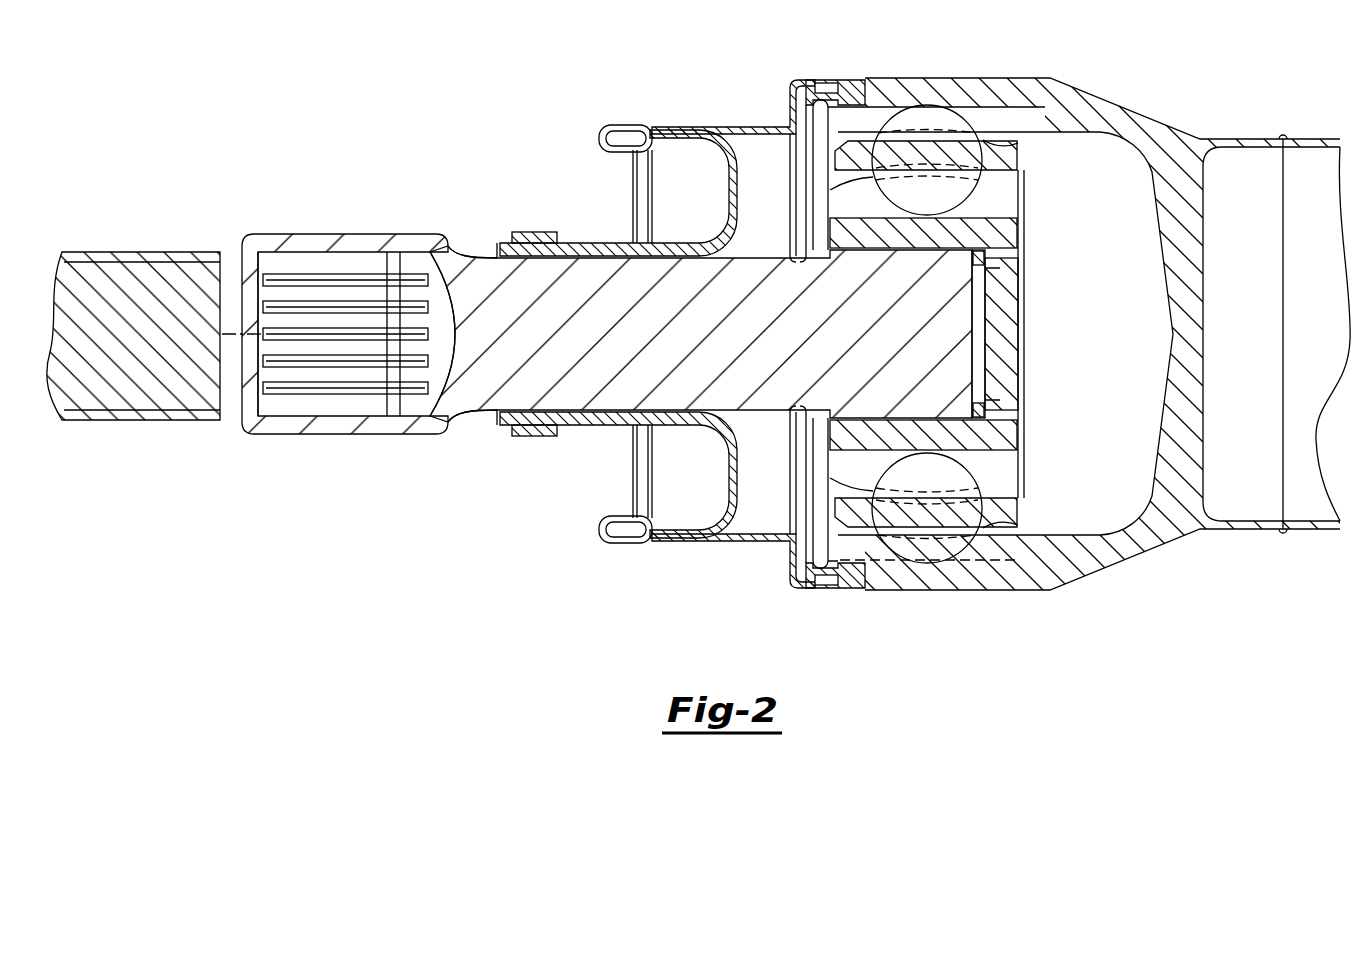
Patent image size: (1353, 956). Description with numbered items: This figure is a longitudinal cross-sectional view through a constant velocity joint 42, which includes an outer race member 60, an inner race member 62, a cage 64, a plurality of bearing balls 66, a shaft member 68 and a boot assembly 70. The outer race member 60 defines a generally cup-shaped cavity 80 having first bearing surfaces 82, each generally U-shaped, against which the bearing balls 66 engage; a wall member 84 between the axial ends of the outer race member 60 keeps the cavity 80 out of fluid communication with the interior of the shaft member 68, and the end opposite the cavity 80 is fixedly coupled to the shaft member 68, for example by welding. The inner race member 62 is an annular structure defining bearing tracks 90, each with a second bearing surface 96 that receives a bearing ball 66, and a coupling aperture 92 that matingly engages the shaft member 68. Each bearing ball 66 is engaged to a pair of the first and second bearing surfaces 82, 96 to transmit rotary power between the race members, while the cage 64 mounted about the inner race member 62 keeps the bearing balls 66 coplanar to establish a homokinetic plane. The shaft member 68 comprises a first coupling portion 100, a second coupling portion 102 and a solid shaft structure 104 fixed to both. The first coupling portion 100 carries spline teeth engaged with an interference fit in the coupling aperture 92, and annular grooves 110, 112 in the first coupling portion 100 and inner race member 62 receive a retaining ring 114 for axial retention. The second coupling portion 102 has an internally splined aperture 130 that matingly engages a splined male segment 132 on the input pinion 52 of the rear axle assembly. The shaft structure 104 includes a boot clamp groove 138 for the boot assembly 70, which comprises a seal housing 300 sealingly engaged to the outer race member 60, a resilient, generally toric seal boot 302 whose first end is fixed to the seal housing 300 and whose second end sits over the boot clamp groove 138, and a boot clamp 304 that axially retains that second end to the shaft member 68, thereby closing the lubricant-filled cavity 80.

The constant velocity joint 42 is at (775, 575).
The input pinion 52 is at (154, 359).
The outer race member 60 is at (1094, 336).
The inner race member 62 is at (1012, 235).
The cage 64 is at (1030, 150).
The bearing balls 66 is at (940, 125).
The shaft member 68 is at (695, 364).
The boot assembly 70 is at (632, 120).
The cup-shaped cavity 80 is at (1115, 520).
The first bearing surfaces 82 is at (890, 105).
The wall member 84 is at (1185, 250).
The bearing tracks 90 is at (994, 465).
The coupling aperture 92 is at (1010, 420).
The second bearing surface 96 is at (1000, 200).
The first coupling portion 100 is at (1012, 332).
The second coupling portion 102 is at (345, 325).
The shaft structure 104 is at (695, 364).
The annular groove 110 is at (982, 300).
The annular groove 112 is at (985, 262).
The retaining ring 114 is at (990, 397).
The internally splined aperture 130 is at (293, 400).
The splined male segment 132 is at (127, 262).
The boot clamp groove 138 is at (495, 400).
The seal housing 300 is at (656, 321).
The seal boot 302 is at (612, 242).
The boot clamp 304 is at (520, 438).